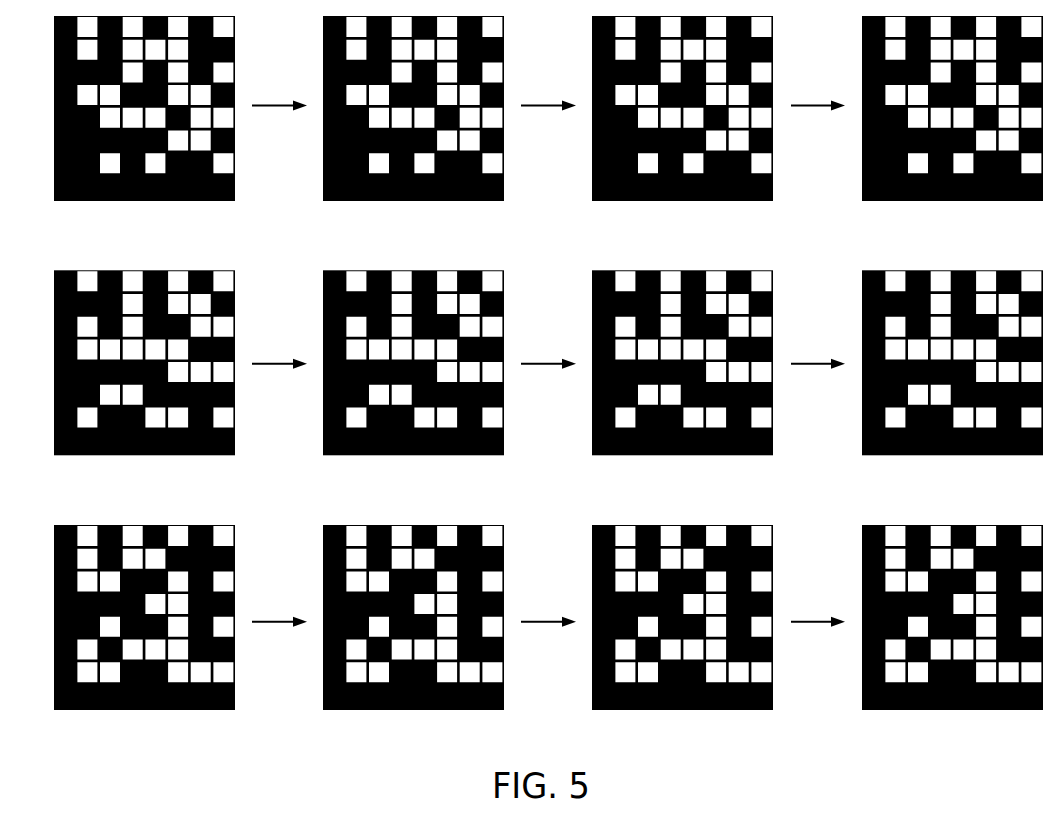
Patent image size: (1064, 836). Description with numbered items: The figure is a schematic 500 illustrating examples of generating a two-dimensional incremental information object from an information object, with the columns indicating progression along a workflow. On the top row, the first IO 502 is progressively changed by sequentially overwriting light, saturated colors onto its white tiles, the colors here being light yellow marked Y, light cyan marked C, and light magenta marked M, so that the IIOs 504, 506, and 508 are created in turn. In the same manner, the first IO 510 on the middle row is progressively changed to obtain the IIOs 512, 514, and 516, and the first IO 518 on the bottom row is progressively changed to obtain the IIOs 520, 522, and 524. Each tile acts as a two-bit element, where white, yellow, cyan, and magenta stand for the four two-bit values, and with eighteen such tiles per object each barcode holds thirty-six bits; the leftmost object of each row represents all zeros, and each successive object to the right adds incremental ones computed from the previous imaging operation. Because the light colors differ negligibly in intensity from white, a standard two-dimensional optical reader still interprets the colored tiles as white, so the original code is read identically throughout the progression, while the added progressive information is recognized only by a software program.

The schematic 500 is at (525, 388).
The first IO 502 is at (121, 129).
The IIO 504 is at (390, 129).
The IIO 506 is at (659, 129).
The IIO 508 is at (929, 129).
The first IO 510 is at (121, 383).
The IIO 512 is at (390, 383).
The IIO 514 is at (659, 383).
The IIO 516 is at (929, 383).
The first IO 518 is at (121, 638).
The IIO 520 is at (390, 638).
The IIO 522 is at (682, 638).
The IIO 524 is at (952, 638).